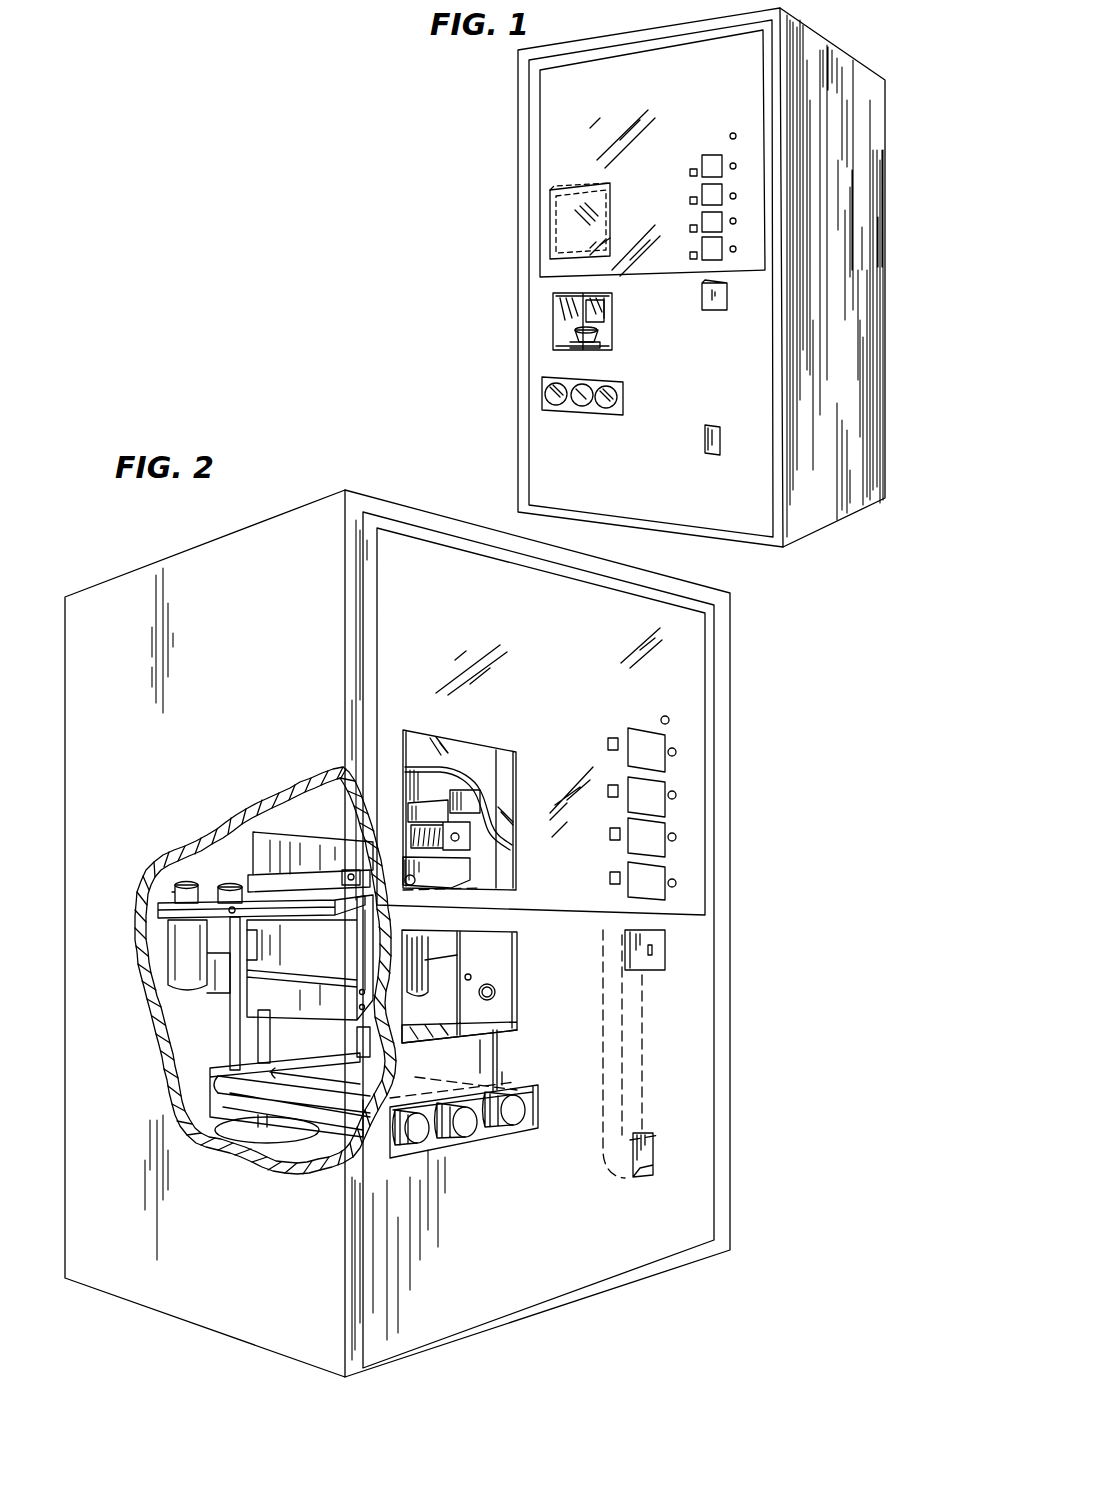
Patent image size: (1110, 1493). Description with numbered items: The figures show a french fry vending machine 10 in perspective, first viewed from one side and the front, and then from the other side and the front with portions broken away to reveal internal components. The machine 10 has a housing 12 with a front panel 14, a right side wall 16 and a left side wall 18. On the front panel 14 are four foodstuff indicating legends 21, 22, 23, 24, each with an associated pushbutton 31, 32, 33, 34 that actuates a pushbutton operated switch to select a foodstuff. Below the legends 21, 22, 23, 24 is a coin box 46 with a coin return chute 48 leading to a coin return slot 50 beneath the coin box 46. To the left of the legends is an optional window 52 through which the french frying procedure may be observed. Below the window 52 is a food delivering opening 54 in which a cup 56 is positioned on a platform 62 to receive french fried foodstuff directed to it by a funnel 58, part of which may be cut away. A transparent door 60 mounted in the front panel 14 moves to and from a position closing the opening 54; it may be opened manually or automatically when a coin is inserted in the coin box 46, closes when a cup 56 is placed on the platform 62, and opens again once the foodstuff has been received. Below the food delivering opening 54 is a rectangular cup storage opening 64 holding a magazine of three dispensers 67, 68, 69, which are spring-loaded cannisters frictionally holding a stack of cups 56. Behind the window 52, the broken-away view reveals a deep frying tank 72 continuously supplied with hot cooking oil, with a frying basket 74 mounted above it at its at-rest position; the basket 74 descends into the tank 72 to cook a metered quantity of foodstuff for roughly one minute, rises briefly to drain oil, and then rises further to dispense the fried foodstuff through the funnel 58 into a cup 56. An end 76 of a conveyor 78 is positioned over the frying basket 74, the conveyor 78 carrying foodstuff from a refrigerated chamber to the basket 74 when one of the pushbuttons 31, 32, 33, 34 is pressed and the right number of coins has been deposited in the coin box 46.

In FIG. 1, the french fry vending machine 10 is at (496, 270).
In FIG. 1, the housing 12 is at (515, 305).
In FIG. 2, the housing 12 is at (587, 1297).
In FIG. 1, the front panel 14 is at (714, 384).
In FIG. 2, the front panel 14 is at (683, 660).
In FIG. 1, the right side wall 16 is at (856, 390).
In FIG. 2, the left side wall 18 is at (115, 793).
In FIG. 1, the foodstuff indicating legend 21 is at (722, 165).
In FIG. 2, the foodstuff indicating legend 21 is at (665, 752).
In FIG. 1, the foodstuff indicating legend 22 is at (722, 193).
In FIG. 2, the foodstuff indicating legend 22 is at (665, 793).
In FIG. 1, the foodstuff indicating legend 23 is at (722, 220).
In FIG. 2, the foodstuff indicating legend 23 is at (665, 833).
In FIG. 1, the foodstuff indicating legend 24 is at (722, 247).
In FIG. 2, the foodstuff indicating legend 24 is at (665, 875).
In FIG. 1, the pushbutton 31 is at (692, 170).
In FIG. 2, the pushbutton 31 is at (612, 740).
In FIG. 1, the pushbutton 32 is at (692, 200).
In FIG. 2, the pushbutton 32 is at (612, 787).
In FIG. 1, the pushbutton 33 is at (692, 228).
In FIG. 2, the pushbutton 33 is at (611, 833).
In FIG. 1, the pushbutton 34 is at (692, 255).
In FIG. 2, the pushbutton 34 is at (612, 876).
In FIG. 1, the coin box 46 is at (727, 297).
In FIG. 2, the coin box 46 is at (665, 950).
In FIG. 2, the coin return chute 48 is at (642, 1072).
In FIG. 1, the coin return slot 50 is at (712, 455).
In FIG. 2, the coin return slot 50 is at (653, 1155).
In FIG. 1, the window 52 is at (563, 211).
In FIG. 2, the window 52 is at (475, 762).
In FIG. 1, the food delivering opening 54 is at (556, 333).
In FIG. 2, the food delivering opening 54 is at (438, 1007).
In FIG. 1, the cup 56 is at (598, 334).
In FIG. 1, the funnel 58 is at (604, 304).
In FIG. 2, the funnel 58 is at (466, 935).
In FIG. 2, the transparent door 60 is at (495, 972).
In FIG. 1, the platform 62 is at (600, 348).
In FIG. 2, the platform 62 is at (470, 1015).
In FIG. 1, the cup storage opening 64 is at (568, 410).
In FIG. 2, the cup storage opening 64 is at (538, 1098).
In FIG. 2, the dispenser 67 is at (420, 1138).
In FIG. 2, the dispenser 68 is at (468, 1130).
In FIG. 2, the dispenser 69 is at (515, 1120).
In FIG. 2, the deep frying tank 72 is at (257, 970).
In FIG. 2, the frying basket 74 is at (277, 843).
In FIG. 2, the end of conveyor 76 is at (405, 770).
In FIG. 2, the conveyor 78 is at (487, 830).